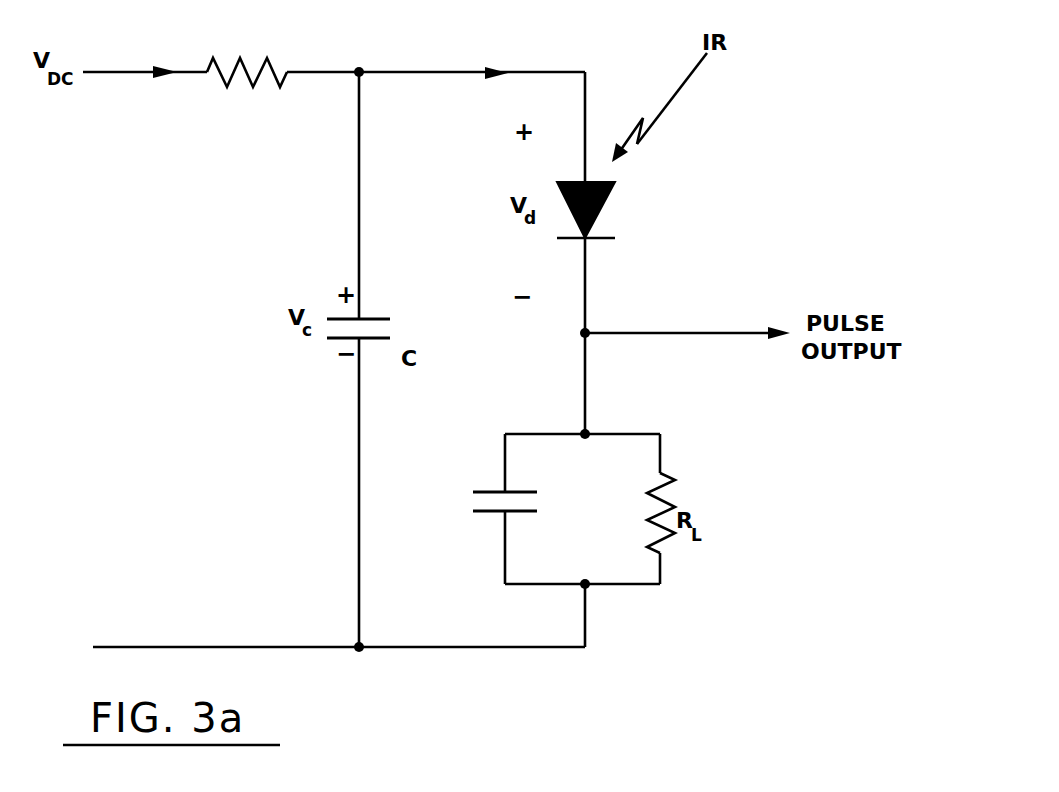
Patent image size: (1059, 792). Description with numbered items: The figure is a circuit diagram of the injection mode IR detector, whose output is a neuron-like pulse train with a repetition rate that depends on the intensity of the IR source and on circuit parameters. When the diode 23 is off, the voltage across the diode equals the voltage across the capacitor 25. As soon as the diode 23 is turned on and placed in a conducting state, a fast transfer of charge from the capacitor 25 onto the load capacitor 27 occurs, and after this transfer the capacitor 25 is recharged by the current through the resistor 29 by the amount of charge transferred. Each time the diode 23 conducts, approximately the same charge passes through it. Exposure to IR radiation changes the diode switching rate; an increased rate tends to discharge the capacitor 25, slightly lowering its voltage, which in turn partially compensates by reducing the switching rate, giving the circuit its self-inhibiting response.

The diode 23 is at (603, 206).
The capacitor 25 is at (373, 313).
The load capacitor 27 is at (488, 490).
The resistor 29 is at (662, 473).